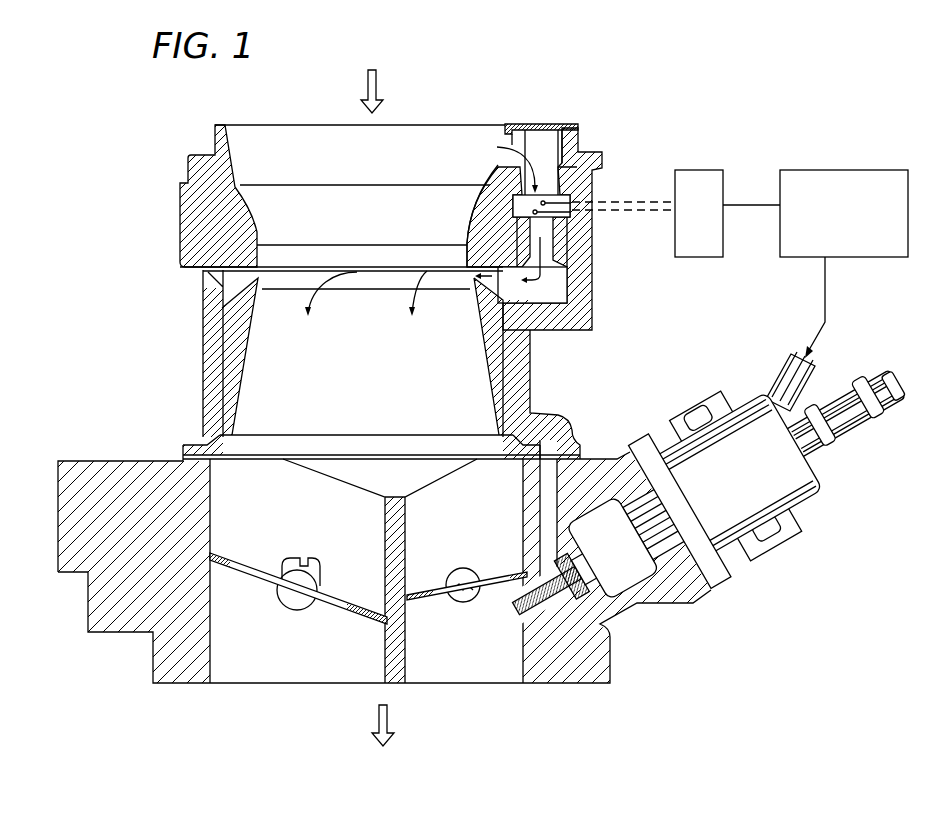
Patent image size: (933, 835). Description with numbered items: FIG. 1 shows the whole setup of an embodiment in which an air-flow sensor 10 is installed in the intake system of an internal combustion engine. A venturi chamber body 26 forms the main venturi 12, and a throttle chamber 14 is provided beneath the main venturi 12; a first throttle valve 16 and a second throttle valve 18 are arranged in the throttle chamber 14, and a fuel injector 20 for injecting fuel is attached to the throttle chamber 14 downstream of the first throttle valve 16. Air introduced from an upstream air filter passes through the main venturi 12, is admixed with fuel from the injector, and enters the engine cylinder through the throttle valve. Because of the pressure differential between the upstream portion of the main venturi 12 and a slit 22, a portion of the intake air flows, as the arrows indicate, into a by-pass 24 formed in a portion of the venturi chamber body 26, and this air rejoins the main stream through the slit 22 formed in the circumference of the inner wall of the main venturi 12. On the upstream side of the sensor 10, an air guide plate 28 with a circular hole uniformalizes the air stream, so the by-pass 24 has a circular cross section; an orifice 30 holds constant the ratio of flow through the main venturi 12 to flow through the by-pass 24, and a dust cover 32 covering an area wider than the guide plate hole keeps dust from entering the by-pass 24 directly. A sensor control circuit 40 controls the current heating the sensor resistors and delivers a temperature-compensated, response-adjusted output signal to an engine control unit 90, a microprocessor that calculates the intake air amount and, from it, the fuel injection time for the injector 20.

The air-flow sensor 10 is at (517, 183).
The main venturi 12 is at (386, 224).
The throttle chamber 14 is at (276, 688).
The first throttle valve 16 is at (428, 590).
The second throttle valve 18 is at (247, 570).
The fuel injector 20 is at (781, 554).
The slit 22 is at (363, 280).
The by-pass 24 is at (547, 145).
The venturi chamber body 26 is at (200, 215).
The air guide plate 28 is at (572, 187).
The orifice 30 is at (556, 248).
The dust cover 32 is at (522, 124).
The sensor control circuit 40 is at (697, 170).
The engine control unit 90 is at (853, 170).